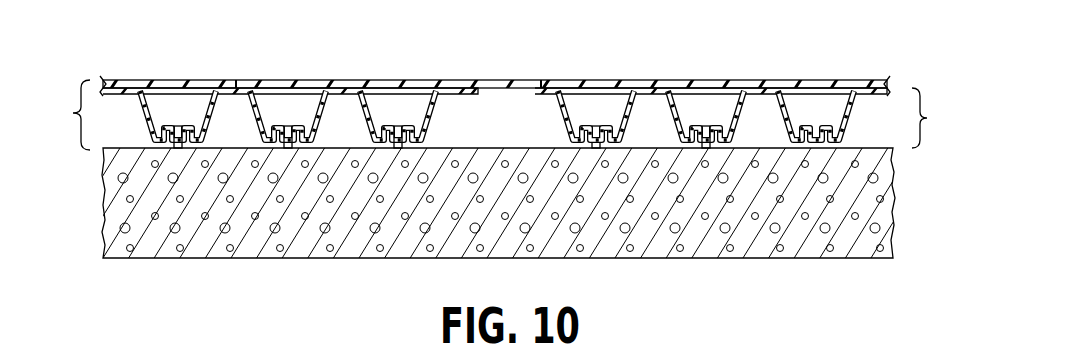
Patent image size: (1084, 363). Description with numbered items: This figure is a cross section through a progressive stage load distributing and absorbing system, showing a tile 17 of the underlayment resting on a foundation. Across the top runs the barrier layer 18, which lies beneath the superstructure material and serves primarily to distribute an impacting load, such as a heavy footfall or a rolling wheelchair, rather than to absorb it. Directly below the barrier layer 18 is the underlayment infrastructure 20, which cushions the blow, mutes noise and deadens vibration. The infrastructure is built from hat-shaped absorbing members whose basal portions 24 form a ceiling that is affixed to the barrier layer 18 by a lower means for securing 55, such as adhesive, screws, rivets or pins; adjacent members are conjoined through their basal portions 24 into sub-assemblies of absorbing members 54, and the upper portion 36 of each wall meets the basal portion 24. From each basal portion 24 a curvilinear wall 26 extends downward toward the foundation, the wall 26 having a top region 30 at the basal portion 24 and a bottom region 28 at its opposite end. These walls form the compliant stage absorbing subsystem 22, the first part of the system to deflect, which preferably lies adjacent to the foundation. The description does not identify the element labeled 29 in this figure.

The tile 17 is at (288, 148).
The barrier layer 18 is at (425, 82).
The underlayment infrastructure 20 is at (66, 115).
The compliant stage absorbing subsystem 22 is at (937, 118).
The basal portion 24 is at (122, 86).
The curvilinear wall 26 is at (264, 114).
The bottom region of curvilinear wall 28 is at (812, 148).
The anchor 29 is at (707, 148).
The top region of curvilinear wall 30 is at (404, 148).
The upper portion of curvilinear wall 36 is at (256, 95).
The sub-assemblies of absorbing members 54 is at (237, 82).
The lower means for securing 55 is at (542, 82).